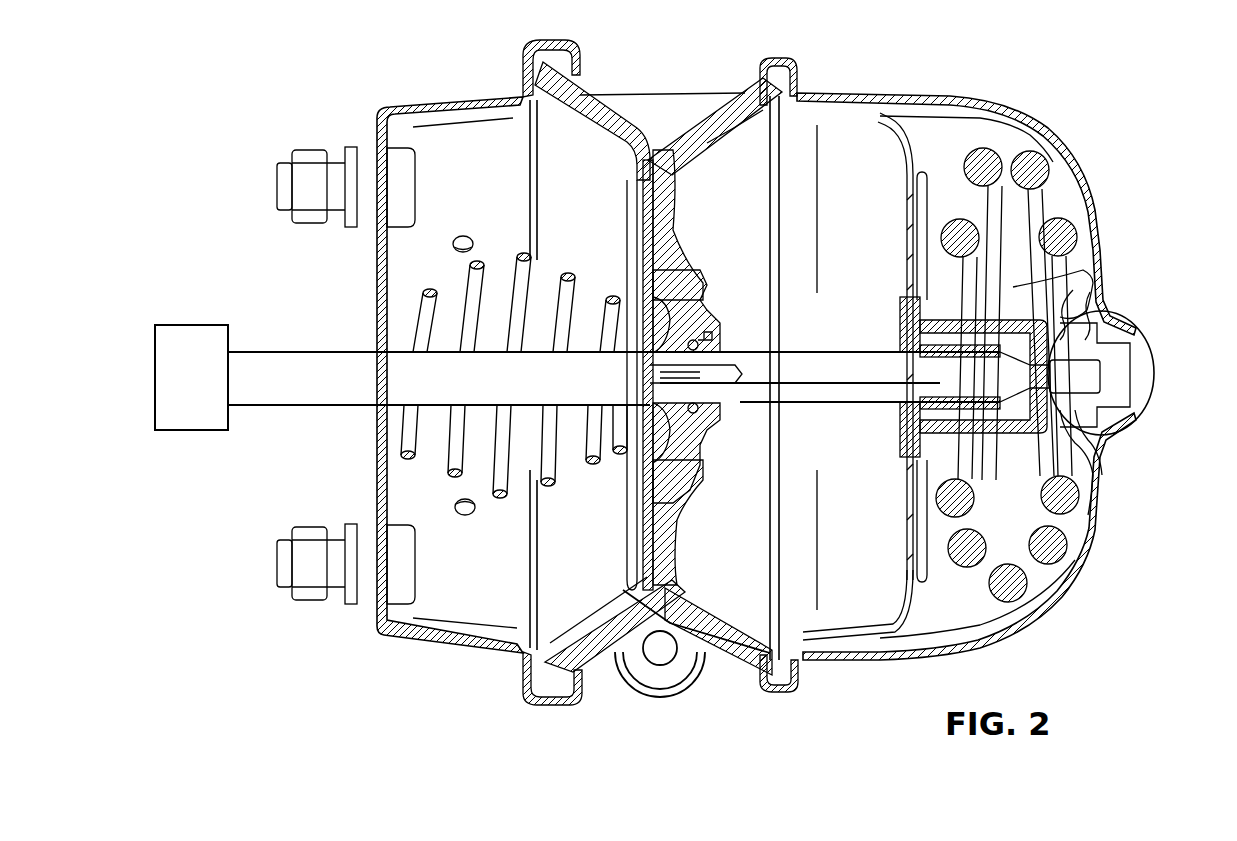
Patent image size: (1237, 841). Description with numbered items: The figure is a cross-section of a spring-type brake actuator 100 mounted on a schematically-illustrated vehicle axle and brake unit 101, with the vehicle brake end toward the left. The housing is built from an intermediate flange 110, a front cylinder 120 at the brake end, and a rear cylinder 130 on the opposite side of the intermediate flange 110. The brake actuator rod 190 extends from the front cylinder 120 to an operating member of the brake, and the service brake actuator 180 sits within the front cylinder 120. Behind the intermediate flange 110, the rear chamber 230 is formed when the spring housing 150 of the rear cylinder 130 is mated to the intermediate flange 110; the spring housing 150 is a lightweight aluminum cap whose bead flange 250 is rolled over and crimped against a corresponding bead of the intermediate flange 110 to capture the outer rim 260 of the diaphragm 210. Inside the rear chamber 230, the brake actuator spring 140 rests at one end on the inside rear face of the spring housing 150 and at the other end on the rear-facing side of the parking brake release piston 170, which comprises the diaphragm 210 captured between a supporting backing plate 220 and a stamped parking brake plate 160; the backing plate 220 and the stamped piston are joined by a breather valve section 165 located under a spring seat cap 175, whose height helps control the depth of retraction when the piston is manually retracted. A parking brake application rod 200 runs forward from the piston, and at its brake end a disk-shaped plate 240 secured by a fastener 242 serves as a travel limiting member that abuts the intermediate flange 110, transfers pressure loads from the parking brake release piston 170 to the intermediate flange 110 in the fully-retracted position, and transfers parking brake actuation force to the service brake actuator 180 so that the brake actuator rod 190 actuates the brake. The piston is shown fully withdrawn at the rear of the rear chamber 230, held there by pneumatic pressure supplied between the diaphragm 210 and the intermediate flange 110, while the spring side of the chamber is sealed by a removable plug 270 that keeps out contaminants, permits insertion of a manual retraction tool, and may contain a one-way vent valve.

The spring brake actuator 100 is at (636, 38).
The vehicle axle and brake unit 101 is at (204, 375).
The intermediate flange 110 is at (743, 88).
The front cylinder 120 is at (437, 137).
The rear cylinder 130 is at (937, 117).
The brake actuator spring 140 is at (975, 143).
The spring housing 150 is at (1043, 117).
The stamped parking brake plate 160 is at (913, 530).
The breather valve section 165 is at (1107, 437).
The parking brake release piston 170 is at (896, 252).
The spring seat cap 175 is at (1023, 297).
The service brake actuator 180 is at (638, 127).
The brake actuator rod 190 is at (287, 348).
The parking brake application rod 200 is at (747, 360).
The diaphragm 210 is at (877, 87).
The supporting backing plate 220 is at (907, 323).
The rear chamber 230 is at (750, 215).
The disk-shaped plate 240 is at (660, 440).
The fastener 242 is at (713, 413).
The bead flange 250 is at (763, 53).
The outer rim 260 is at (797, 687).
The plug 270 is at (1143, 403).